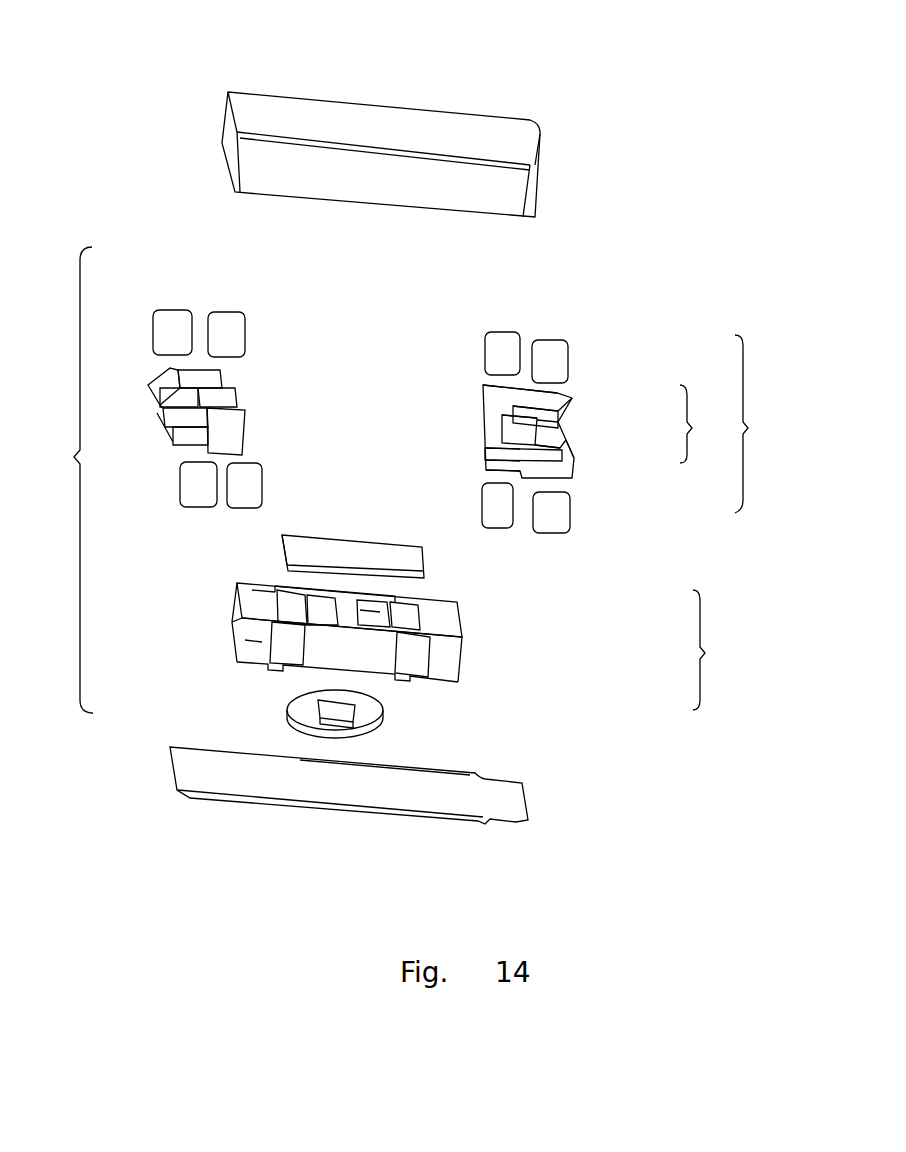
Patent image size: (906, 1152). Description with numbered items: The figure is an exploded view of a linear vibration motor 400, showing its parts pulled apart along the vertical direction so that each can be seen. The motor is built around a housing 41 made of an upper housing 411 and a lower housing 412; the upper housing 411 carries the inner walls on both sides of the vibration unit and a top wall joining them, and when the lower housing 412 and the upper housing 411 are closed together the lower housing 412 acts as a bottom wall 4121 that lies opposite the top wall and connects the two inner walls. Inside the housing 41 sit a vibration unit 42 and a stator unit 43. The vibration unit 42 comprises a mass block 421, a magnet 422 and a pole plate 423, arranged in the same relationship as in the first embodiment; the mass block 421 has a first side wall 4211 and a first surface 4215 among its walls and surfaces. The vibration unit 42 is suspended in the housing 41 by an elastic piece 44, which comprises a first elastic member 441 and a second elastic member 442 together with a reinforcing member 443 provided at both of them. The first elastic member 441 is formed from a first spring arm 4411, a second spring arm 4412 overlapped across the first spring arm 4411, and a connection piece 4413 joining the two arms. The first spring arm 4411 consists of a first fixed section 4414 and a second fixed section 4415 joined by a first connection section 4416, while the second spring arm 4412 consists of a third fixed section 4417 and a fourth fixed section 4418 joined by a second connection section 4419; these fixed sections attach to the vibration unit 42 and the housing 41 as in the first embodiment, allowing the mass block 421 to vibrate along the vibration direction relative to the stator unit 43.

The linear vibration motor 400 is at (403, 32).
The housing 41 is at (70, 480).
The upper housing 411 is at (210, 159).
The lower housing 412 is at (165, 738).
The bottom wall 4121 is at (413, 793).
The vibration unit 42 is at (715, 650).
The mass block 421 is at (472, 669).
The first side wall 4211 is at (255, 642).
The first surface 4215 is at (263, 593).
The magnet 422 is at (377, 612).
The pole plate 423 is at (395, 557).
The stator unit 43 is at (370, 713).
The elastic piece 44 is at (755, 424).
The first elastic member 441 is at (706, 424).
The first spring arm 4411 is at (578, 423).
The second spring arm 4412 is at (579, 452).
The connection piece 4413 is at (542, 430).
The first fixed section 4414 is at (497, 466).
The second fixed section 4415 is at (497, 395).
The first connection section 4416 is at (487, 468).
The third fixed section 4417 is at (510, 428).
The fourth fixed section 4418 is at (557, 392).
The second connection section 4419 is at (542, 430).
The second elastic member 442 is at (266, 385).
The reinforcing member 443 is at (550, 508).